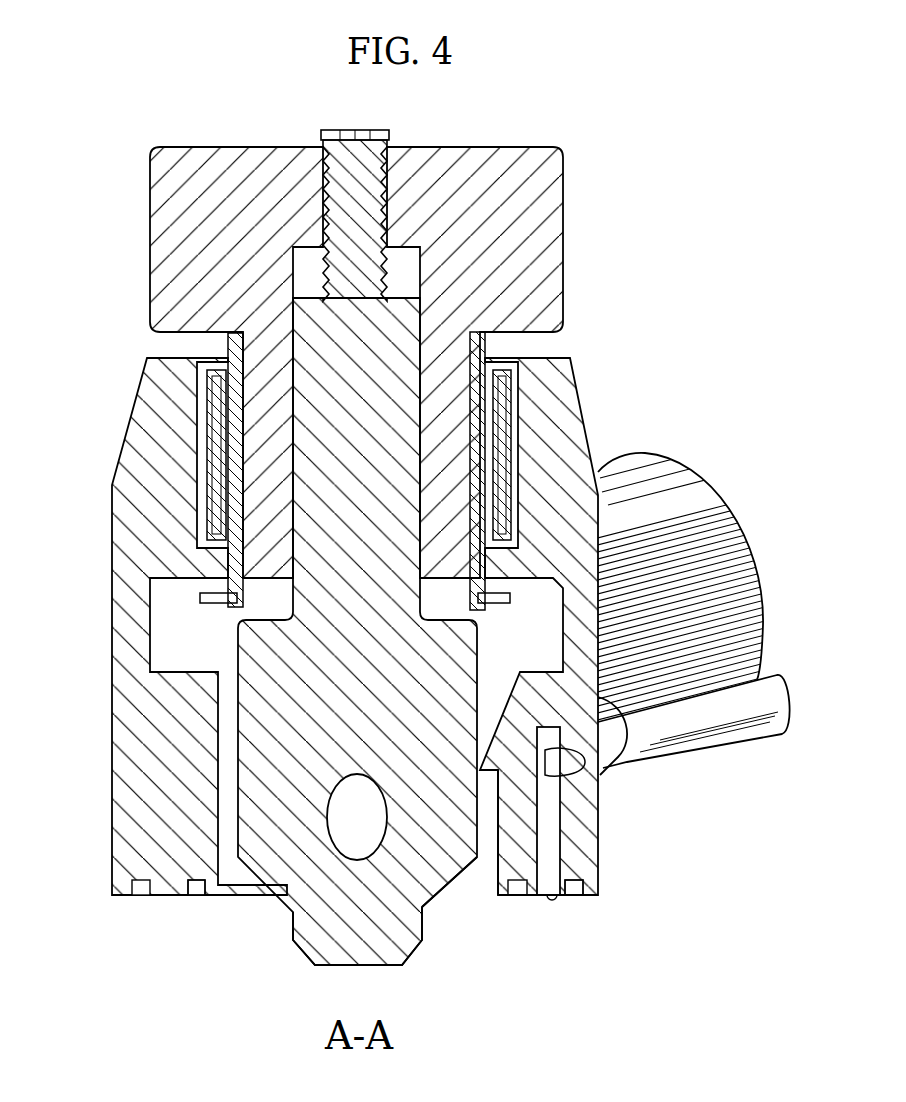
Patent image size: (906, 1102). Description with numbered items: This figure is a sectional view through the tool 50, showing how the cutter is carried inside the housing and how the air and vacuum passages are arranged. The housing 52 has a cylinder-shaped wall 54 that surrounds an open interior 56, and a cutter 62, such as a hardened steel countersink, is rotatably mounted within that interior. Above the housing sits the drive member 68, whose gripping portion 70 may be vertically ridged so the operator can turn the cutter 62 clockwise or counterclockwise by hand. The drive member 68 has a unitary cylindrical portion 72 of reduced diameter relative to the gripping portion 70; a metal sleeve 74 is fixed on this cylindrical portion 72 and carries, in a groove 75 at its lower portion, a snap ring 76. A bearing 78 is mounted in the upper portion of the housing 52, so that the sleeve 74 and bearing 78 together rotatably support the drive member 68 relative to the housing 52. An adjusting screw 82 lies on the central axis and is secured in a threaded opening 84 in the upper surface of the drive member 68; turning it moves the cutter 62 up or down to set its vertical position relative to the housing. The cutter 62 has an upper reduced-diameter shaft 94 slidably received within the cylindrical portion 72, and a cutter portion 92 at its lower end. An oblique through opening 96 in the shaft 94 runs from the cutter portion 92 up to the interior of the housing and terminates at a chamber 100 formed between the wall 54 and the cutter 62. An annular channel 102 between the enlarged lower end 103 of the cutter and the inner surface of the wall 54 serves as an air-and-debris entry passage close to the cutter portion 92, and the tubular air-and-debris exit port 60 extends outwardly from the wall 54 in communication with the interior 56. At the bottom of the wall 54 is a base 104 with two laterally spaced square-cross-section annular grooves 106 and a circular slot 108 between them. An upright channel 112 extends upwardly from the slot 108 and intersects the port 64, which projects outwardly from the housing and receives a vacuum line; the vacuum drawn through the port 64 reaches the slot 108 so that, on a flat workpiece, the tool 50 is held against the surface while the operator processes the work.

The tool 50 is at (602, 223).
The housing 52 is at (602, 403).
The wall 54 is at (118, 764).
The open interior 56 is at (182, 607).
The air-and-debris exit port 60 is at (717, 522).
The cutter 62 is at (292, 892).
The port 64 is at (750, 722).
The drive member 68 is at (266, 133).
The gripping portion 70 is at (565, 275).
The cylindrical portion 72 is at (458, 352).
The sleeve 74 is at (484, 612).
The groove 75 is at (243, 611).
The snap ring 76 is at (232, 599).
The bearing 78 is at (205, 383).
The adjusting screw 82 is at (387, 150).
The threaded opening 84 is at (396, 178).
The cutter portion 92 is at (460, 867).
The shaft 94 is at (303, 440).
The through opening 96 is at (348, 845).
The chamber 100 is at (165, 650).
The annular channel 102 is at (492, 860).
The enlarged lower end 103 is at (262, 707).
The base 104 is at (605, 897).
The annular grooves 106 is at (196, 890).
The circular slot 108 is at (560, 897).
The upright channel 112 is at (548, 822).